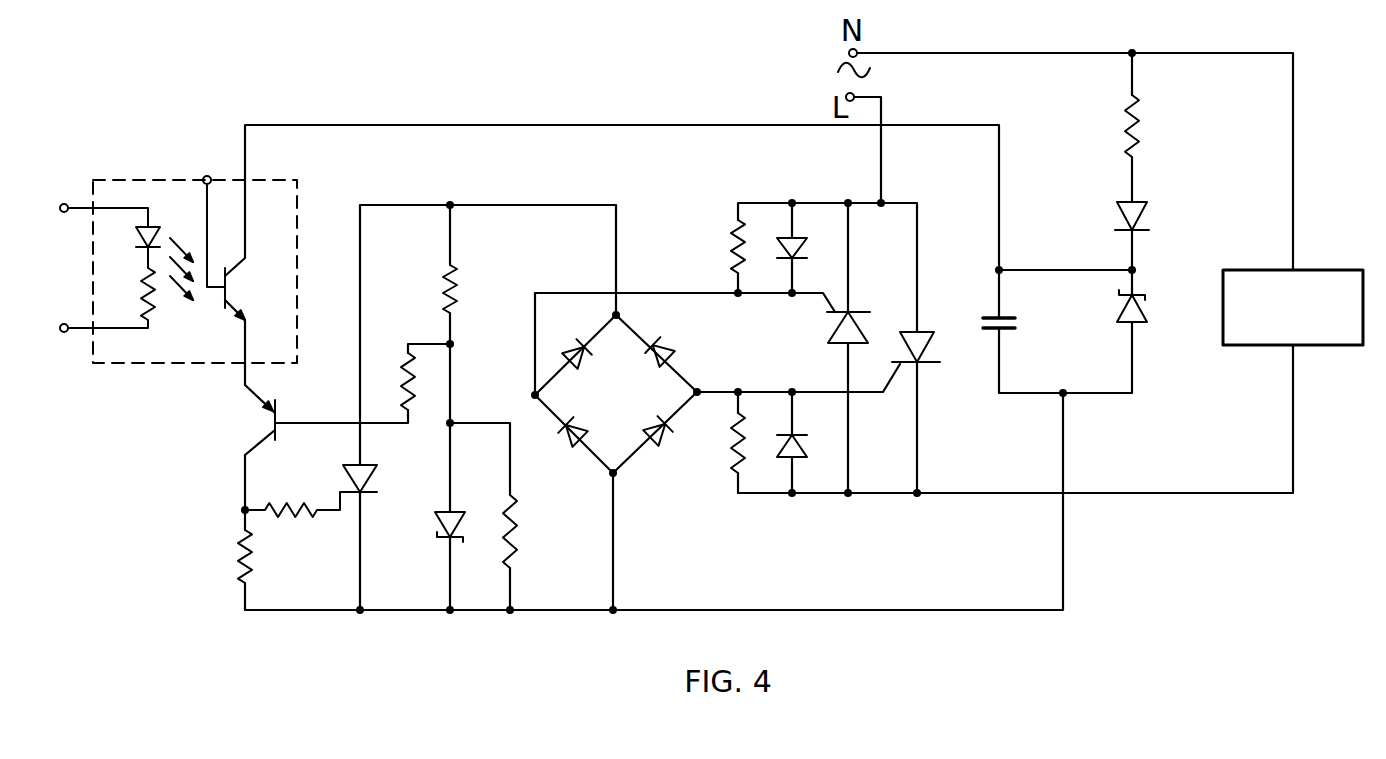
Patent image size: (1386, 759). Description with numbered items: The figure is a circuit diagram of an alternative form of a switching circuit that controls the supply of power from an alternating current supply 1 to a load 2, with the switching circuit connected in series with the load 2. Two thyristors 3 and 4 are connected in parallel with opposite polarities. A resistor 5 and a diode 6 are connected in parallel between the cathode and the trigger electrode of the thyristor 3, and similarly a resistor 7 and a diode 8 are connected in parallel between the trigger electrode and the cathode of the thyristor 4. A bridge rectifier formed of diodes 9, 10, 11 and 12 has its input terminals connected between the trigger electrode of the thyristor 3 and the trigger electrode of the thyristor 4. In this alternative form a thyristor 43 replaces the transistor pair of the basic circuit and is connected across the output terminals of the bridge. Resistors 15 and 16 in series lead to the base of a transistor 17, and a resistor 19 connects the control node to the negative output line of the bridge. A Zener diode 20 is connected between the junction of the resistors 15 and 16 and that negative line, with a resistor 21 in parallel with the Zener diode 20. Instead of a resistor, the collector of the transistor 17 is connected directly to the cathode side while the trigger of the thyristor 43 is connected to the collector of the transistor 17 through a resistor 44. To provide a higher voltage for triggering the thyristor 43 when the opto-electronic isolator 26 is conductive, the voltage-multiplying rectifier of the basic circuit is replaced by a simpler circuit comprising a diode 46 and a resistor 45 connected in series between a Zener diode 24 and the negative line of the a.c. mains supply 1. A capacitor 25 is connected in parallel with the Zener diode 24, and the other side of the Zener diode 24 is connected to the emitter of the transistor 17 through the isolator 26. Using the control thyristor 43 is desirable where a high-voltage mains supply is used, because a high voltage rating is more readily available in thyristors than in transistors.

The alternating current supply 1 is at (838, 72).
The load 2 is at (1224, 270).
The thyristor 3 is at (833, 332).
The thyristor 4 is at (930, 343).
The resistor 5 is at (735, 222).
The diode 6 is at (805, 248).
The resistor 7 is at (732, 477).
The diode 8 is at (805, 445).
The diode 9 is at (665, 443).
The diode 10 is at (670, 348).
The diode 11 is at (588, 365).
The diode 12 is at (565, 448).
The resistor 15 is at (458, 267).
The resistor 16 is at (405, 363).
The transistor 17 is at (280, 405).
The resistor 19 is at (238, 555).
The Zener diode 20 is at (443, 512).
The resistor 21 is at (513, 497).
The Zener diode 24 is at (1145, 306).
The capacitor 25 is at (1013, 318).
The opto-electronic isolator device 26 is at (297, 180).
The thyristor 43 is at (343, 470).
The resistor 44 is at (285, 517).
The resistor 45 is at (1140, 120).
The diode 46 is at (1147, 203).